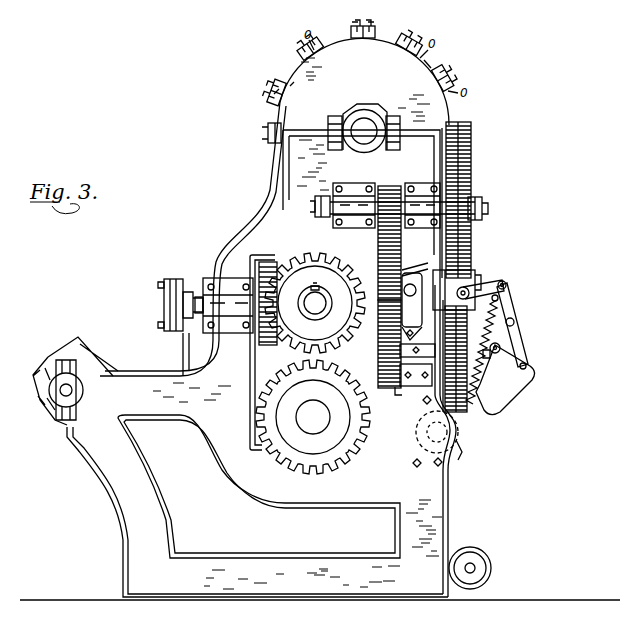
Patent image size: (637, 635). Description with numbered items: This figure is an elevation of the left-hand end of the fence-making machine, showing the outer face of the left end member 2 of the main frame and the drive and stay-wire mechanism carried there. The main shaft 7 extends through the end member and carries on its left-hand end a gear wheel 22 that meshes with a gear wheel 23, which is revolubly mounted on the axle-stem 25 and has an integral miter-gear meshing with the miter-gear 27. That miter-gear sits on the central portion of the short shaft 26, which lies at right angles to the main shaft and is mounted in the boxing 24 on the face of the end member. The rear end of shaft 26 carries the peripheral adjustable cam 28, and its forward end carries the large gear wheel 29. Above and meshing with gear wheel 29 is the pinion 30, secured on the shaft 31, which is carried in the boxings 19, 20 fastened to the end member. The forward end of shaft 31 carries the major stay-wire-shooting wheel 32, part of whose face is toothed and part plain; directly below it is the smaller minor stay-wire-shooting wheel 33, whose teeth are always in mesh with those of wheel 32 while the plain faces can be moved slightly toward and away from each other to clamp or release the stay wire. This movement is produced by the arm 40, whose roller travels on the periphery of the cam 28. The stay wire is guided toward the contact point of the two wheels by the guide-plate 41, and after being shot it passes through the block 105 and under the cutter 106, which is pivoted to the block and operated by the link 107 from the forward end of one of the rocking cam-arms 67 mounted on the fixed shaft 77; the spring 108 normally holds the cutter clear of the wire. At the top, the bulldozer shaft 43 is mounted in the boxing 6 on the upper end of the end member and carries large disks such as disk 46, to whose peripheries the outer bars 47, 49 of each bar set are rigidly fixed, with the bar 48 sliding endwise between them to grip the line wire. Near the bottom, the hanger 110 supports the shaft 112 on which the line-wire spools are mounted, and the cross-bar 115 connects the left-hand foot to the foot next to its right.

The left end member 2 is at (252, 318).
The boxing 6 is at (353, 115).
The main shaft 7 is at (313, 417).
The boxing 19 is at (350, 185).
The boxing 20 is at (424, 185).
The gear wheel 22 is at (350, 452).
The gear wheel 23 is at (303, 249).
The boxing 24 is at (231, 290).
The axle-stem 25 is at (321, 313).
The short shaft 26 is at (203, 312).
The miter-gear 27 is at (272, 346).
The peripheral adjustable cam 28 is at (170, 280).
The large gear wheel 29 is at (390, 390).
The pinion 30 is at (390, 190).
The shaft 31 is at (318, 206).
The major stay-wire-shooting wheel 32 is at (472, 143).
The minor stay-wire-shooting wheel 33 is at (467, 393).
The arm 40 is at (181, 345).
The guide-plate 41 is at (465, 288).
The shaft of the bulldozer 43 is at (366, 130).
The disk 46 is at (433, 78).
The bar 47 is at (356, 35).
The bar 48 is at (362, 50).
The bar 49 is at (373, 46).
The rocking cam-arm 67 is at (523, 387).
The fixed shaft 77 is at (462, 445).
The block 105 is at (472, 283).
The cutter 106 is at (505, 285).
The link 107 is at (518, 313).
The spring 108 is at (498, 340).
The hanger 110 is at (491, 567).
The shaft 112 is at (473, 565).
The cross-bar 115 is at (505, 288).